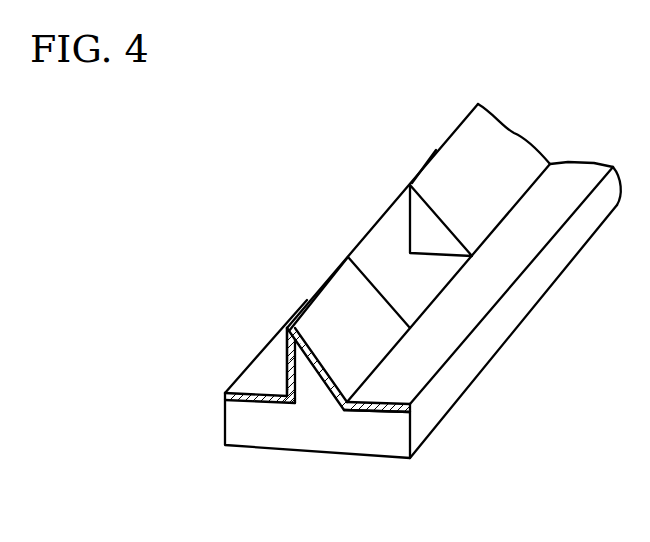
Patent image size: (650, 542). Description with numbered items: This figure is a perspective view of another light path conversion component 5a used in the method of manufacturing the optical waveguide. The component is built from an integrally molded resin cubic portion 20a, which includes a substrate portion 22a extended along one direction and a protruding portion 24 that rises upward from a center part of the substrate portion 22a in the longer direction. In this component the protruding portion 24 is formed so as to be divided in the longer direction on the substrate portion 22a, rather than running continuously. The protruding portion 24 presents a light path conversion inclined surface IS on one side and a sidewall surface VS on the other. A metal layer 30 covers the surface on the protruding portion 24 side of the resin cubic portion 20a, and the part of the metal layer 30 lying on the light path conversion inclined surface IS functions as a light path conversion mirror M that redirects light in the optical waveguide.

The light path conversion component 5a is at (367, 117).
The resin cubic portion 20a is at (128, 423).
The substrate portion 22a is at (310, 388).
The protruding portion 24 is at (278, 402).
The sidewall surface VS is at (288, 365).
The light path conversion inclined surface IS is at (316, 358).
The light path conversion mirror M is at (488, 180).
The metal layer 30 is at (370, 412).